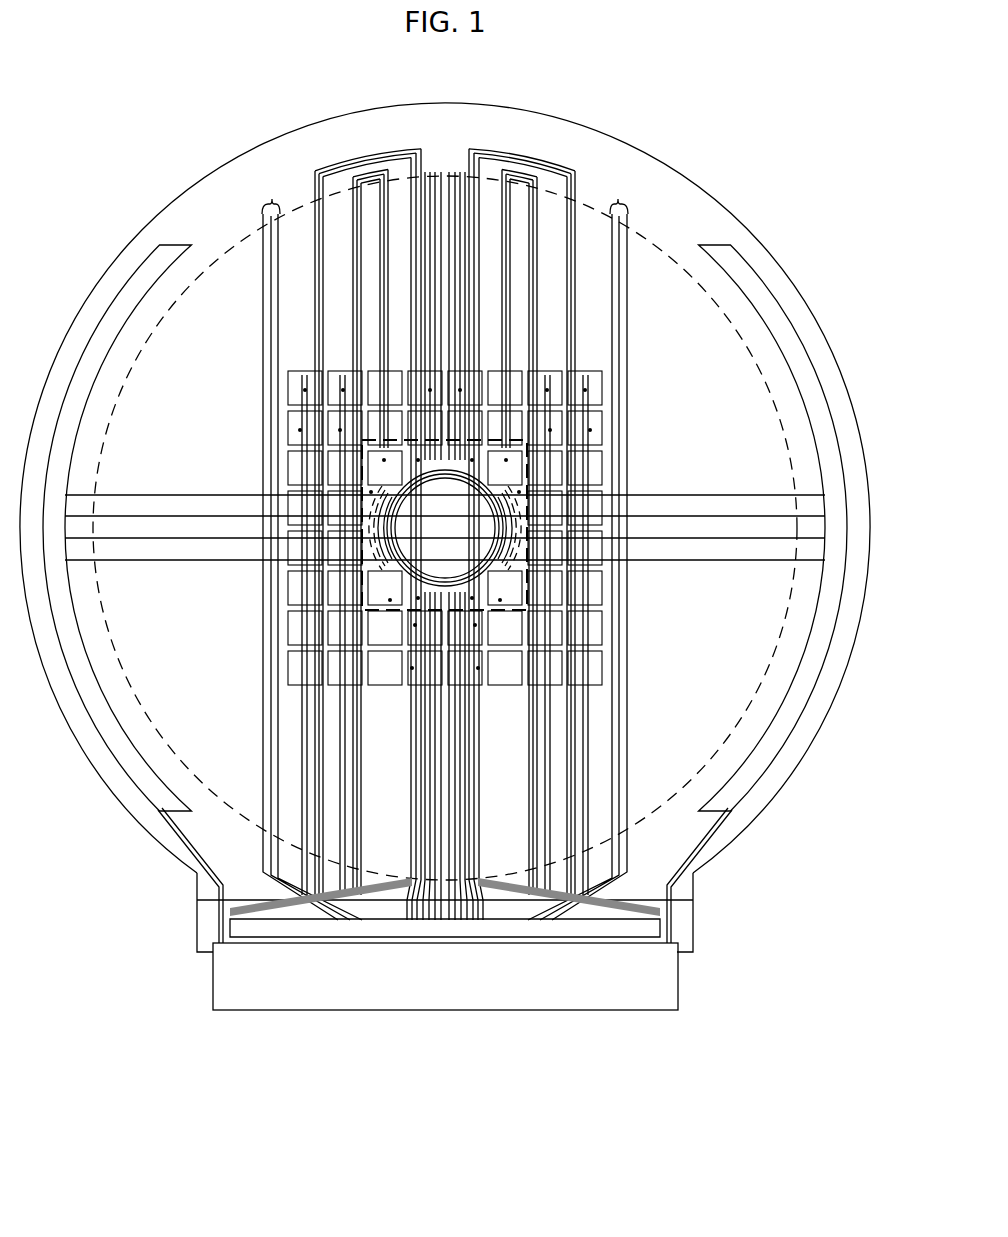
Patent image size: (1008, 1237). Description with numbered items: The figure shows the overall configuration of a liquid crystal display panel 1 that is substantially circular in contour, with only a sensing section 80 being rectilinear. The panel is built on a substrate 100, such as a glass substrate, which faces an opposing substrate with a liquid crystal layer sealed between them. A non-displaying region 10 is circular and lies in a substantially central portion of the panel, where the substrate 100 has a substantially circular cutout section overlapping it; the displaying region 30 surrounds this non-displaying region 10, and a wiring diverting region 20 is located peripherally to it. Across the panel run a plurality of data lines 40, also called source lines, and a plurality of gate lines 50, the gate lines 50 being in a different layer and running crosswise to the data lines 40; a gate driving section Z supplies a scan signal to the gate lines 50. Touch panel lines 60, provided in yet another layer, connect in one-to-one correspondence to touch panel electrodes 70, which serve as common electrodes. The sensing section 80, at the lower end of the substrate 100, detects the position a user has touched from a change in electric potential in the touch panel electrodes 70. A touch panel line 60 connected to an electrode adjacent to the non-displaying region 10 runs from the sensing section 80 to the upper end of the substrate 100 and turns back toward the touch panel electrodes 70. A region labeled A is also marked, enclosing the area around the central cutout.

The liquid crystal display panel 1 is at (873, 307).
The non-displaying region 10 is at (473, 543).
The wiring diverting region 20 is at (407, 482).
The displaying region 30 is at (230, 287).
The data lines 40 is at (618, 200).
The gate lines 50 is at (828, 558).
The touch panel lines 60 is at (300, 708).
The touch panel electrodes 70 is at (512, 472).
The sensing section 80 is at (470, 935).
The substrate 100 is at (682, 200).
The gate driving section Z is at (144, 273).
The region A is at (388, 614).